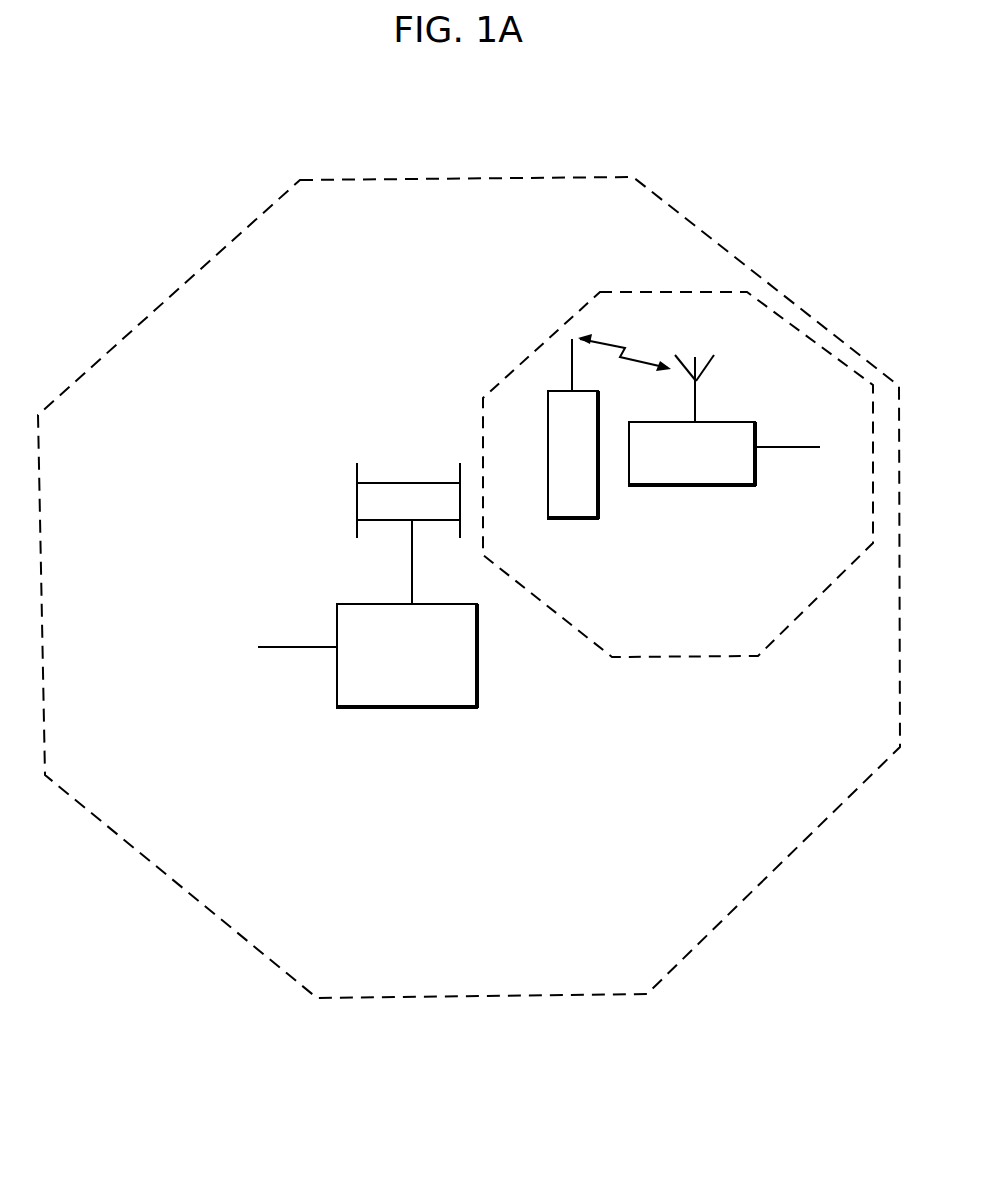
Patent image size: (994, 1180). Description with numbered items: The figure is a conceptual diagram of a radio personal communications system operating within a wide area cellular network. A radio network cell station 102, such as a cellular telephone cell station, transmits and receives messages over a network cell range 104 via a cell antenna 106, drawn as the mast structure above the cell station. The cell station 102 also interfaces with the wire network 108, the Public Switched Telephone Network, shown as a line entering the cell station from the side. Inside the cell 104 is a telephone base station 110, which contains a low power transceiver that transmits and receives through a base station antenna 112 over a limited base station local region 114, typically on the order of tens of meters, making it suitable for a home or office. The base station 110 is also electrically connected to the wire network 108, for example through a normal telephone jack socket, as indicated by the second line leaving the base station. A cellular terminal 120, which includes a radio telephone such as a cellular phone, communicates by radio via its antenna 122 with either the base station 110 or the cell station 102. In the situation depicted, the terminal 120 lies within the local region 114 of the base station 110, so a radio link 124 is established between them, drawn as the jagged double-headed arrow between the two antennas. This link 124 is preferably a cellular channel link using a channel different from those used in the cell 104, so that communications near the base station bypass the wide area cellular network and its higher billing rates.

The radio network cell station 102 is at (478, 630).
The network cell range 104 is at (216, 244).
The cell antenna 106 is at (410, 553).
The wire network 108 is at (285, 647).
The telephone base station 110 is at (723, 485).
The base station antenna 112 is at (700, 400).
The base station local region 114 is at (576, 303).
The cellular terminal 120 is at (548, 422).
The antenna 122 is at (569, 364).
The radio link 124 is at (645, 362).